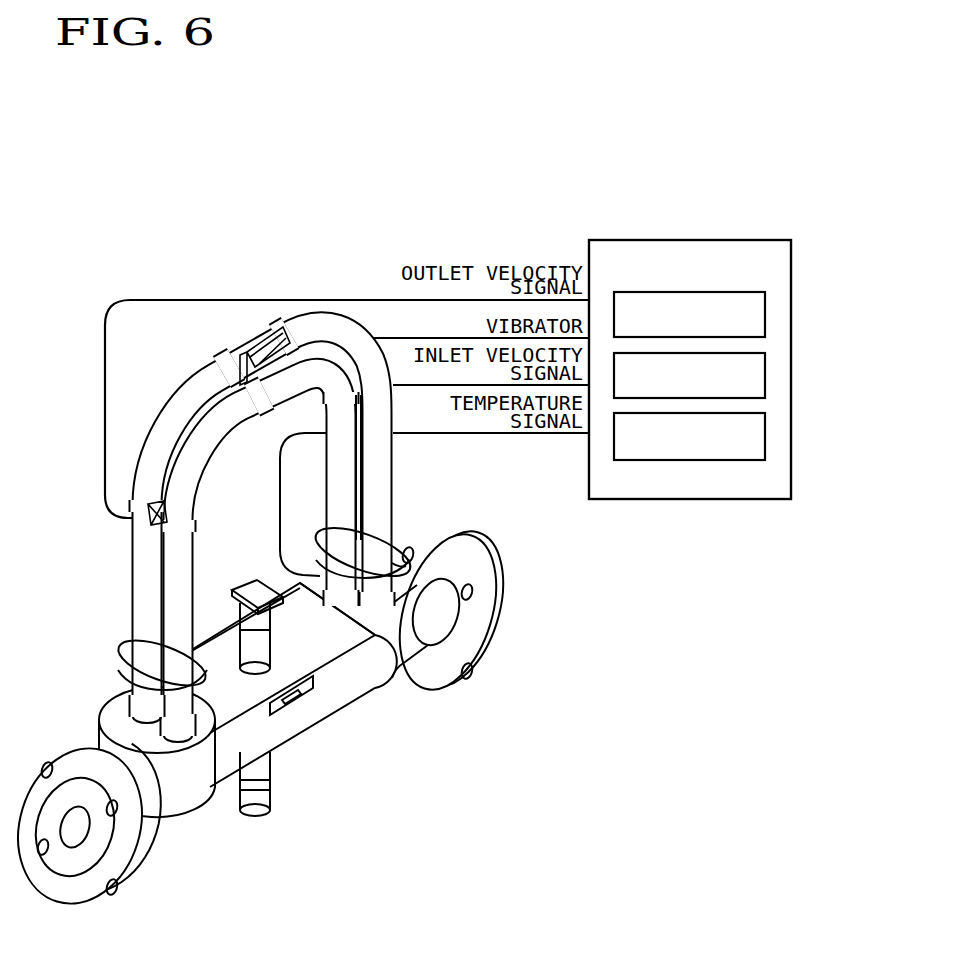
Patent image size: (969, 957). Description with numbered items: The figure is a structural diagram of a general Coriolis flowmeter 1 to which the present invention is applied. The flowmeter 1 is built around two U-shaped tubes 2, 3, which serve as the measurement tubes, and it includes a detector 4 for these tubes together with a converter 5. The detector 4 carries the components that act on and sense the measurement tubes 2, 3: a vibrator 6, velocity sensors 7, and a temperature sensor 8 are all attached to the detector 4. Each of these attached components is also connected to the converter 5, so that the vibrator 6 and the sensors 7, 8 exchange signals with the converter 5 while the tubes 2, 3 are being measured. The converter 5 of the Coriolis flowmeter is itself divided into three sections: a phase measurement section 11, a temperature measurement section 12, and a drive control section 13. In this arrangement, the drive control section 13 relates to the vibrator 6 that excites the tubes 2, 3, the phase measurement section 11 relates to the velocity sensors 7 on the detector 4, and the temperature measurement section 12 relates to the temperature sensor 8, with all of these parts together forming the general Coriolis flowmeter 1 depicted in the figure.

The Coriolis flowmeter 1 is at (388, 207).
The U-shaped tube 2 is at (190, 398).
The U-shaped tube 3 is at (213, 432).
The detector 4 is at (98, 470).
The converter 5 is at (668, 240).
The vibrator 6 is at (278, 328).
The velocity sensor 7 is at (156, 522).
The temperature sensor 8 is at (400, 570).
The phase measurement section 11 is at (765, 304).
The temperature measurement section 12 is at (765, 365).
The drive control section 13 is at (765, 425).